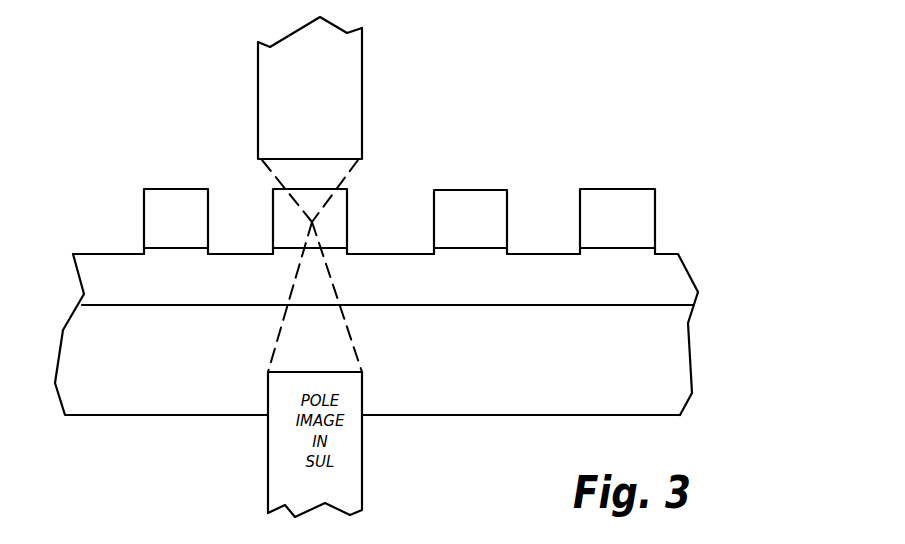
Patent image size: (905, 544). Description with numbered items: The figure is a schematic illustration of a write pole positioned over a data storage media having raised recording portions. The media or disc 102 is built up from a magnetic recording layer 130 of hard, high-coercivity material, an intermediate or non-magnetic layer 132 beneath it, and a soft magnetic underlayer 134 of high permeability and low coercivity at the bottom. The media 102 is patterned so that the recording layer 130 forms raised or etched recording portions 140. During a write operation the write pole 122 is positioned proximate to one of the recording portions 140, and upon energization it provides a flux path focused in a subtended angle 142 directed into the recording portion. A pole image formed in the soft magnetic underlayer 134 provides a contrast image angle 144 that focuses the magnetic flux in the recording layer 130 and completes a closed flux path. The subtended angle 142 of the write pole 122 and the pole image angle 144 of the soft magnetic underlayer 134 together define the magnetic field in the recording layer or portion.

The media 102 is at (575, 141).
The write pole 122 is at (357, 91).
The magnetic recording layer 130 is at (397, 258).
The intermediate layer 132 is at (688, 267).
The soft magnetic underlayer 134 is at (652, 332).
The recording portions 140 is at (160, 180).
The subtended angle 142 is at (271, 172).
The pole image angle 144 is at (294, 275).